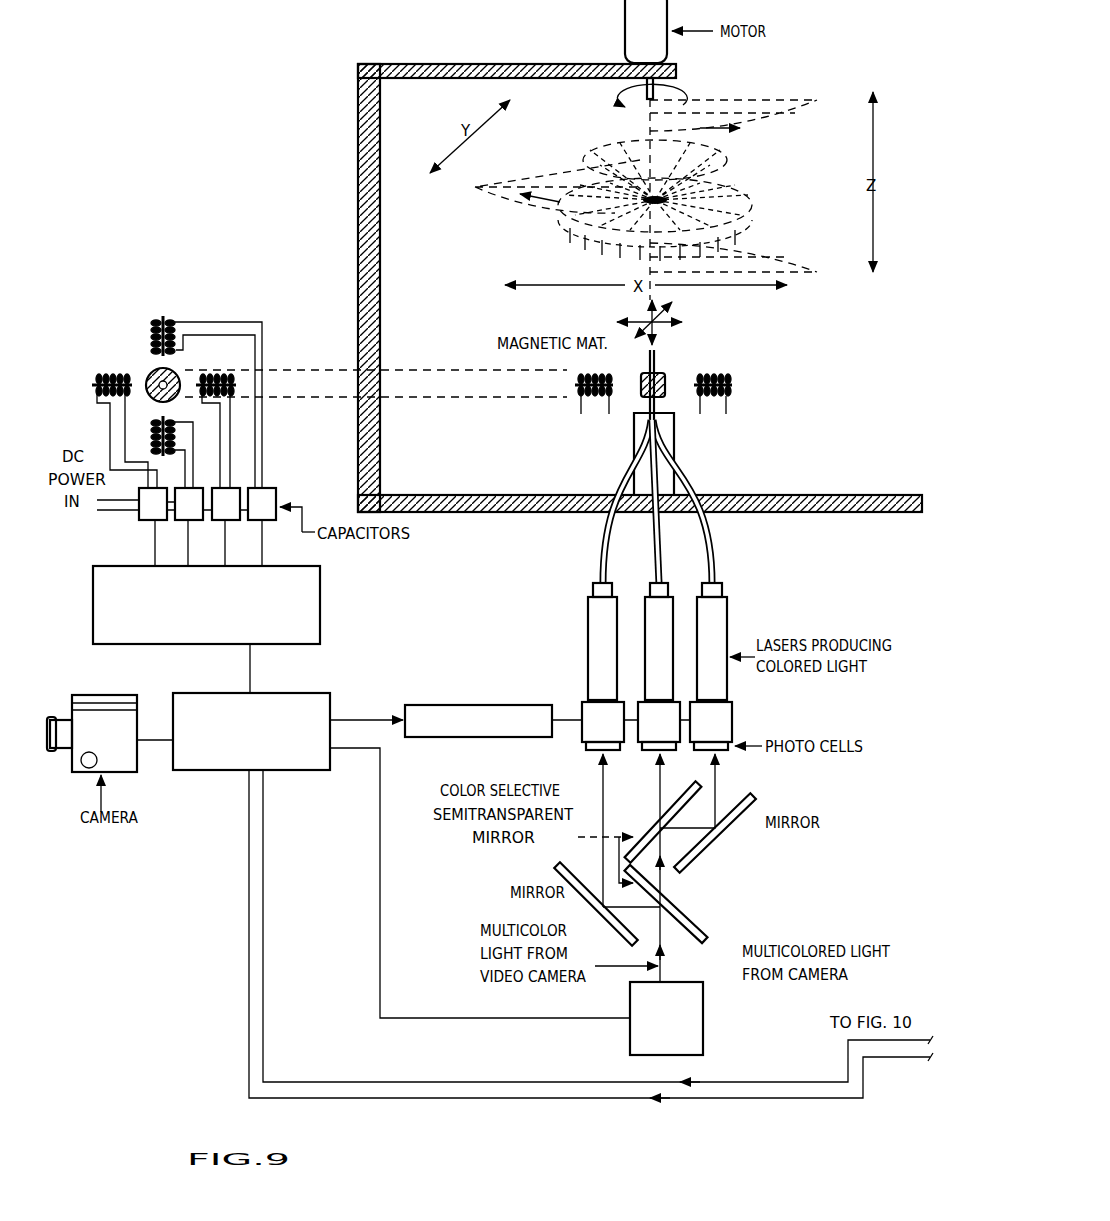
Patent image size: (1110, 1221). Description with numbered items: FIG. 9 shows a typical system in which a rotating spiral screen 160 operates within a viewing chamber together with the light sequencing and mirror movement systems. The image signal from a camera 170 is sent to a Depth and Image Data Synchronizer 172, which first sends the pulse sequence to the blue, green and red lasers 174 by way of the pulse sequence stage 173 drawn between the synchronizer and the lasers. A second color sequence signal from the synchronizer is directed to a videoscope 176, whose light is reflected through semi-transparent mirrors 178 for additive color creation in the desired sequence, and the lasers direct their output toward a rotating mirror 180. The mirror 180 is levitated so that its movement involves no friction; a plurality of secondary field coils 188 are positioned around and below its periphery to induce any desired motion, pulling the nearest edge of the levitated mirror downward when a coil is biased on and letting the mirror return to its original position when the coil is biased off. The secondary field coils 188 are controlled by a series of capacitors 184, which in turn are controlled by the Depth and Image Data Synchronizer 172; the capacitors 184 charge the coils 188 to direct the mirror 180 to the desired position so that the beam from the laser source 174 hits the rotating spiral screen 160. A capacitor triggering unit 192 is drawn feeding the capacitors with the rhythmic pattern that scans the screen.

The rotating spiral screen 160 is at (527, 193).
The camera 170 is at (118, 766).
The Depth and Image Data Synchronizer 172 is at (287, 770).
The pulse sequence 173 is at (458, 705).
The blue, green and red lasers 174 is at (558, 660).
The videoscope 176 is at (700, 998).
The semi-transparent mirrors 178 is at (732, 903).
The rotating mirror 180 is at (660, 378).
The capacitors 184 is at (150, 522).
The secondary field coils 188 is at (176, 333).
The capacitor triggering for rhythmic pattern that scans screen 192 is at (103, 632).